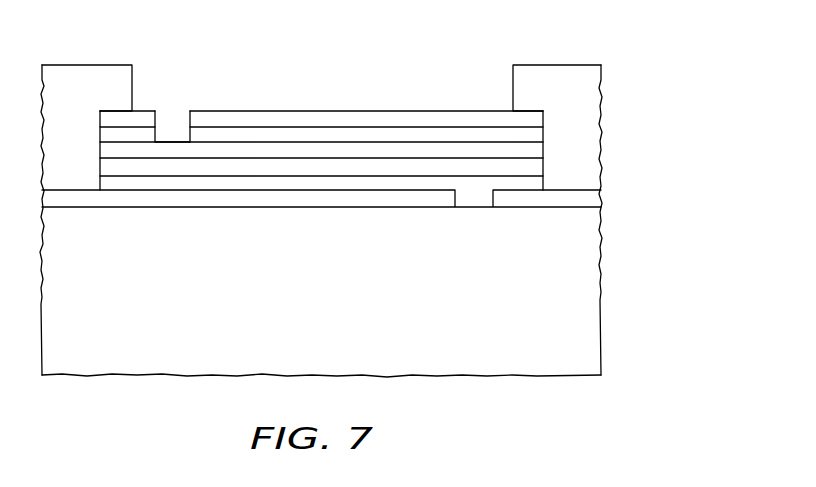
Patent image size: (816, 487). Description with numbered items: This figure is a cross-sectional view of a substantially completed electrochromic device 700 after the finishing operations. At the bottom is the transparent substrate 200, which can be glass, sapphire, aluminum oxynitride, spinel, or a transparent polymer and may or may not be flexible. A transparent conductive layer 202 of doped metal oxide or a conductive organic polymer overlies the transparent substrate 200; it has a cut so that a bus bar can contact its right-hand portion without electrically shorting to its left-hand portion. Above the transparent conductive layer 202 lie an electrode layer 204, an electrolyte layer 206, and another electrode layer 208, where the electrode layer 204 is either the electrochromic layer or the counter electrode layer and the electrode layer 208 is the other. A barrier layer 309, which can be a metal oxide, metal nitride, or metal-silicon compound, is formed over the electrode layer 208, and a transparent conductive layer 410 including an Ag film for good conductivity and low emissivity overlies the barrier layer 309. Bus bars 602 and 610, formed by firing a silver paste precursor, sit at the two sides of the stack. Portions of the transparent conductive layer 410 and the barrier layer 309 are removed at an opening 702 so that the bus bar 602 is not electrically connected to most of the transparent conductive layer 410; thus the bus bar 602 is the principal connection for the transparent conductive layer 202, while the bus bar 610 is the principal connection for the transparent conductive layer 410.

The electrochromic device 700 is at (385, 194).
The transparent substrate 200 is at (582, 344).
The transparent conductive layer 202 is at (77, 197).
The electrode layer 204 is at (197, 185).
The electrolyte layer 206 is at (288, 168).
The electrode layer 208 is at (368, 153).
The barrier layer 309 is at (302, 135).
The transparent conductive layer 410 is at (425, 120).
The opening 702 is at (170, 128).
The bus bar 602 is at (102, 98).
The bus bar 610 is at (583, 100).